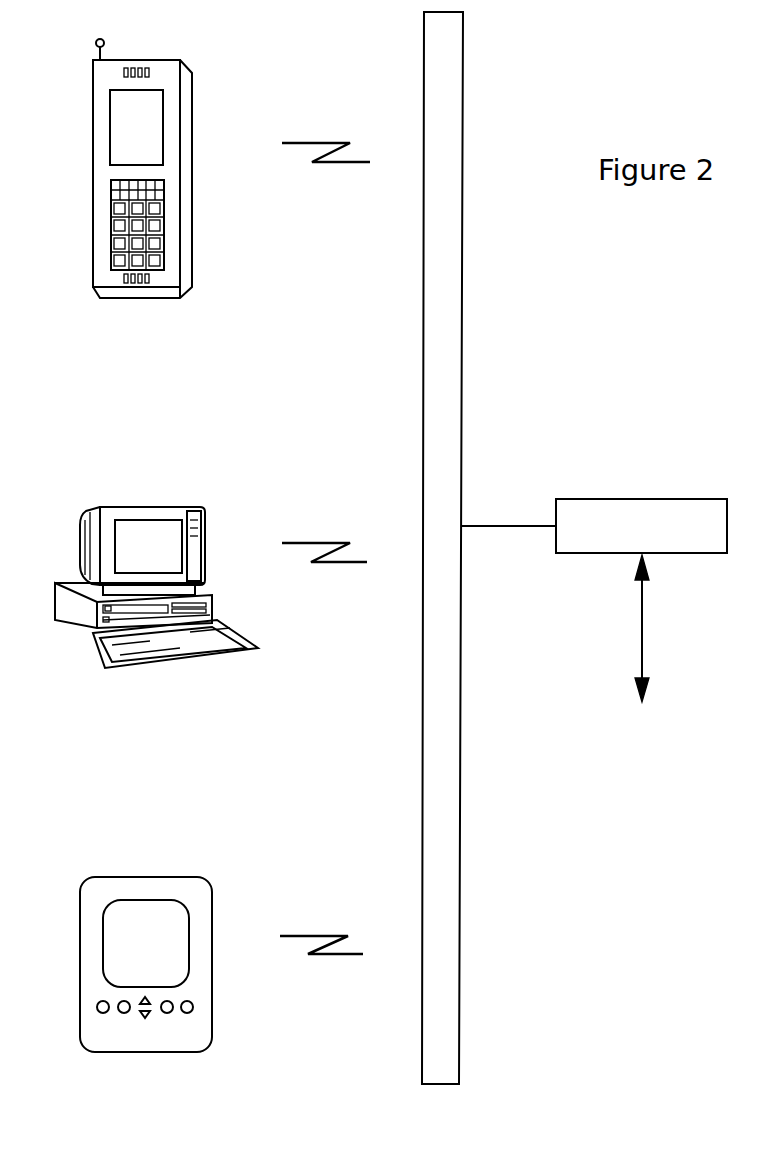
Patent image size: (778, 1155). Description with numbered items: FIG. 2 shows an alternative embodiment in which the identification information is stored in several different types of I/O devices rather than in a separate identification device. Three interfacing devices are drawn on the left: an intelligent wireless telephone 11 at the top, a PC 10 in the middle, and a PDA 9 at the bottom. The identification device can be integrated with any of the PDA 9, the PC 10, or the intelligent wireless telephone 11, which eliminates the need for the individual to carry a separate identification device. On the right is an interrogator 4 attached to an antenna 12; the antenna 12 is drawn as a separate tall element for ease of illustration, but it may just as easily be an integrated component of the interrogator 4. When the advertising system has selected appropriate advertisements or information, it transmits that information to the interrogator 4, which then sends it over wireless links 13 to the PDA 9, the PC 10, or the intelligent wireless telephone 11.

The interrogator 4 is at (650, 499).
The PDA 9 is at (92, 943).
The PC 10 is at (82, 558).
The intelligent wireless telephone 11 is at (102, 143).
The antenna 12 is at (462, 478).
The wireless communication link 13 is at (303, 143).